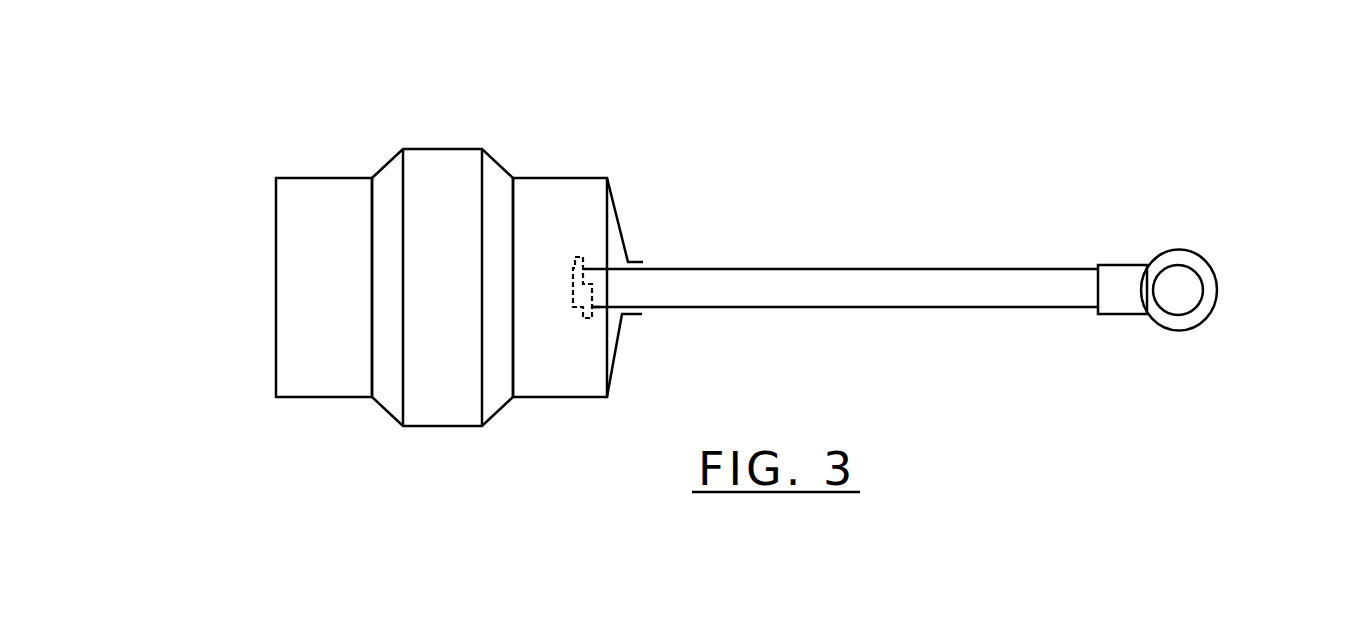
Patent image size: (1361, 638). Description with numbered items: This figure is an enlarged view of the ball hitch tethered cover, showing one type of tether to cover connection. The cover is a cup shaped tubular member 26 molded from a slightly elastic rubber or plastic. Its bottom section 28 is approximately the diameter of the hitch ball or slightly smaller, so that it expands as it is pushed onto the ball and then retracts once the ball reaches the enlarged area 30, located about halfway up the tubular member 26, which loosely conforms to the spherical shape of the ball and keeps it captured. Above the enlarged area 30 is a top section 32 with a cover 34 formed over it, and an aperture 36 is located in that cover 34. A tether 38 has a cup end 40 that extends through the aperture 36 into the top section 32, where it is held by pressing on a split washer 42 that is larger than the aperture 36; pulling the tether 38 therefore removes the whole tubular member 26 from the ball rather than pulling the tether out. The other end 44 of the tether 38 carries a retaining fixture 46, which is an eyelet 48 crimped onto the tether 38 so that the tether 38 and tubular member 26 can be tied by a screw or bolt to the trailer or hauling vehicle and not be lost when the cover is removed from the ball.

The cup shaped tubular member 26 is at (634, 100).
The bottom section 28 is at (294, 328).
The enlarged area 30 is at (432, 327).
The top section 32 is at (560, 339).
The cover 34 is at (680, 198).
The aperture 36 is at (696, 299).
The tether 38 is at (840, 322).
The cup end 40 is at (641, 353).
The split washer 42 is at (524, 199).
The other end 44 is at (1082, 253).
The retaining fixture 46 is at (1260, 200).
The eyelet 48 is at (1239, 288).